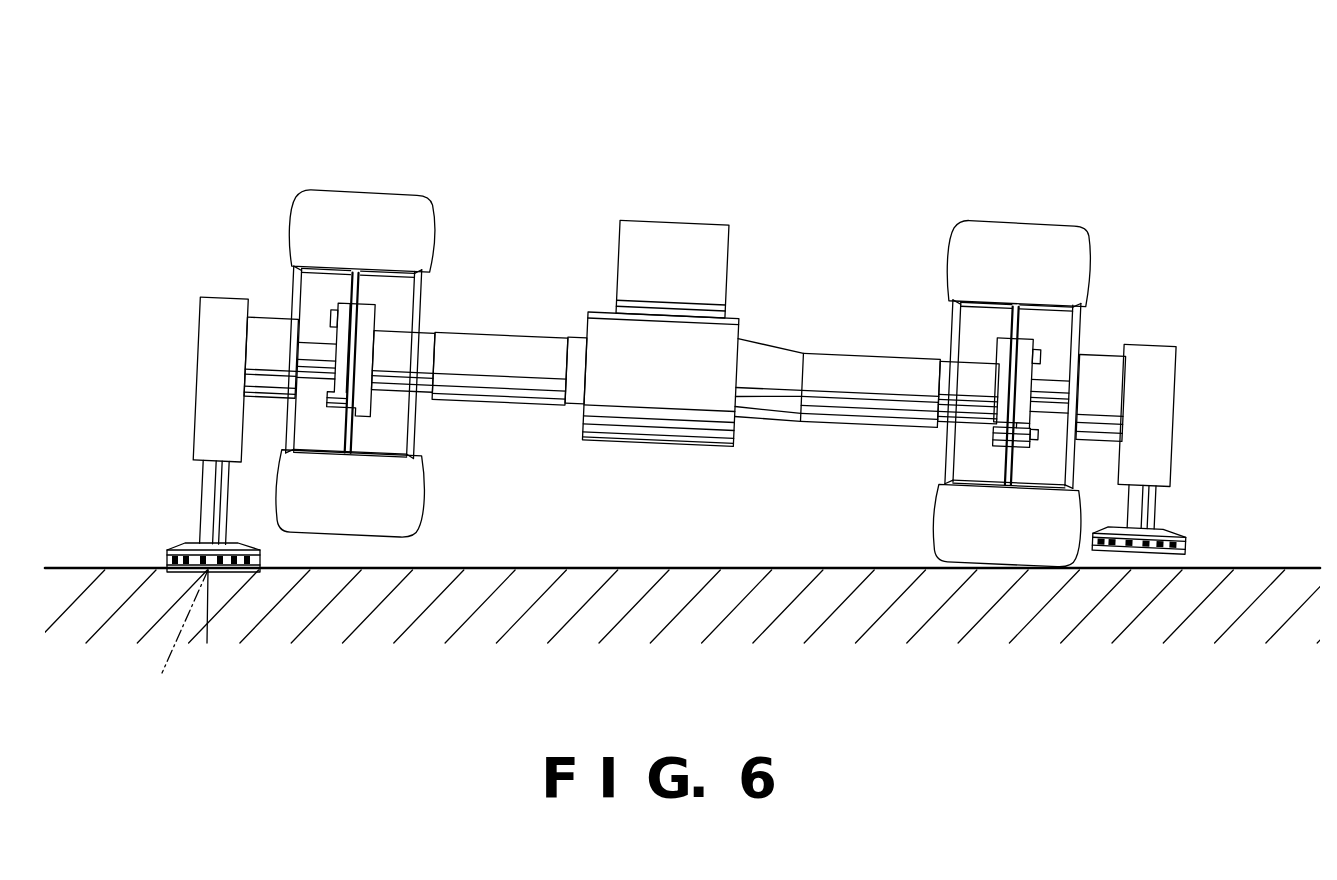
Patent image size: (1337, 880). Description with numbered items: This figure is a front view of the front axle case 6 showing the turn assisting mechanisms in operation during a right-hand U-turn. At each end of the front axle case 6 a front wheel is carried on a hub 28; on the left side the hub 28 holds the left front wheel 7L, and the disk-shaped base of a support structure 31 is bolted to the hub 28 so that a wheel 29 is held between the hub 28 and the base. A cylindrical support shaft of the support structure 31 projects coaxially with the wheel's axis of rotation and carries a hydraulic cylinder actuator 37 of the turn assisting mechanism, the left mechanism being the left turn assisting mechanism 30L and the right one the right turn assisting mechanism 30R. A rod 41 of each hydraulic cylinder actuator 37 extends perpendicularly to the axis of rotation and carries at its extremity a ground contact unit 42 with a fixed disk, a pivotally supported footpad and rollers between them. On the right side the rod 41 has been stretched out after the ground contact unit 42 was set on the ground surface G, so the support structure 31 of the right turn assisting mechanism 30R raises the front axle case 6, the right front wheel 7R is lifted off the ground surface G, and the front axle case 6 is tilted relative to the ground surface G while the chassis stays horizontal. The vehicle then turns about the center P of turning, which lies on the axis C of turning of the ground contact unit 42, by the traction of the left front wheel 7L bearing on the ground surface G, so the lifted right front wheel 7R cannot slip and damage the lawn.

The front axle case 6 is at (775, 342).
The right front wheel 7R is at (307, 222).
The left front wheel 7L is at (1078, 257).
The hub 28 is at (375, 308).
The wheel 29 is at (368, 422).
The right turn assisting mechanism 30R is at (253, 297).
The left turn assisting mechanism 30L is at (1117, 337).
The support structure 31 is at (313, 343).
The hydraulic cylinder actuator 37 is at (203, 362).
The rod 41 is at (208, 490).
The ground contact unit 42 is at (165, 550).
The ground surface G is at (563, 567).
The axis of turning C is at (172, 639).
The center of turning P is at (212, 572).